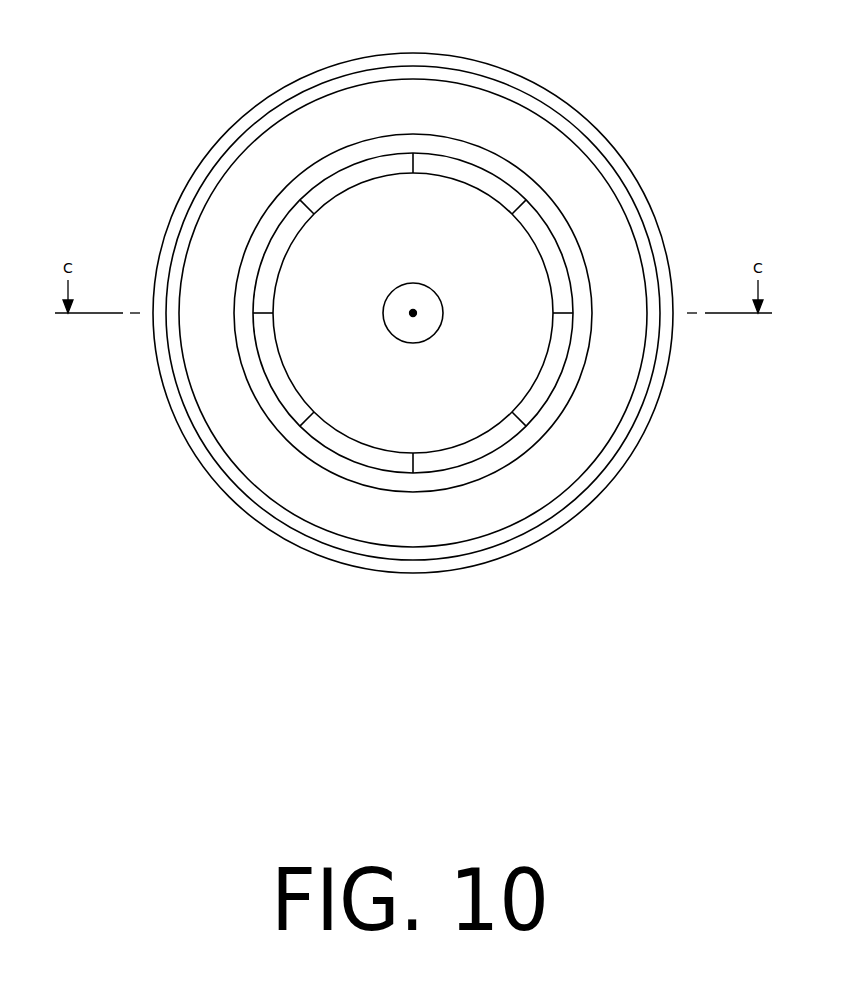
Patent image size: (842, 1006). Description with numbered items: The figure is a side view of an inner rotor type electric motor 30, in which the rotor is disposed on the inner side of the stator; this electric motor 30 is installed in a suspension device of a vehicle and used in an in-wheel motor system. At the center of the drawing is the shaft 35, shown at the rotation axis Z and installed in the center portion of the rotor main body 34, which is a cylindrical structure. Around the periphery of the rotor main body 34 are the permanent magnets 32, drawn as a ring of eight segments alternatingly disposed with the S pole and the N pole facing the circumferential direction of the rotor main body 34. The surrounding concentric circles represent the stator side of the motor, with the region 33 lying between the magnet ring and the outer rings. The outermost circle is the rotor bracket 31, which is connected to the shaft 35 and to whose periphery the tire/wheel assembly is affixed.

The inner rotor type electric motor 30 is at (579, 60).
The rotor bracket 31 is at (426, 573).
The permanent magnets 32 is at (388, 460).
The back yoke 33 is at (500, 513).
The rotor main body 34 is at (310, 380).
The shaft 35 is at (425, 330).
The rotation axis Z is at (432, 313).